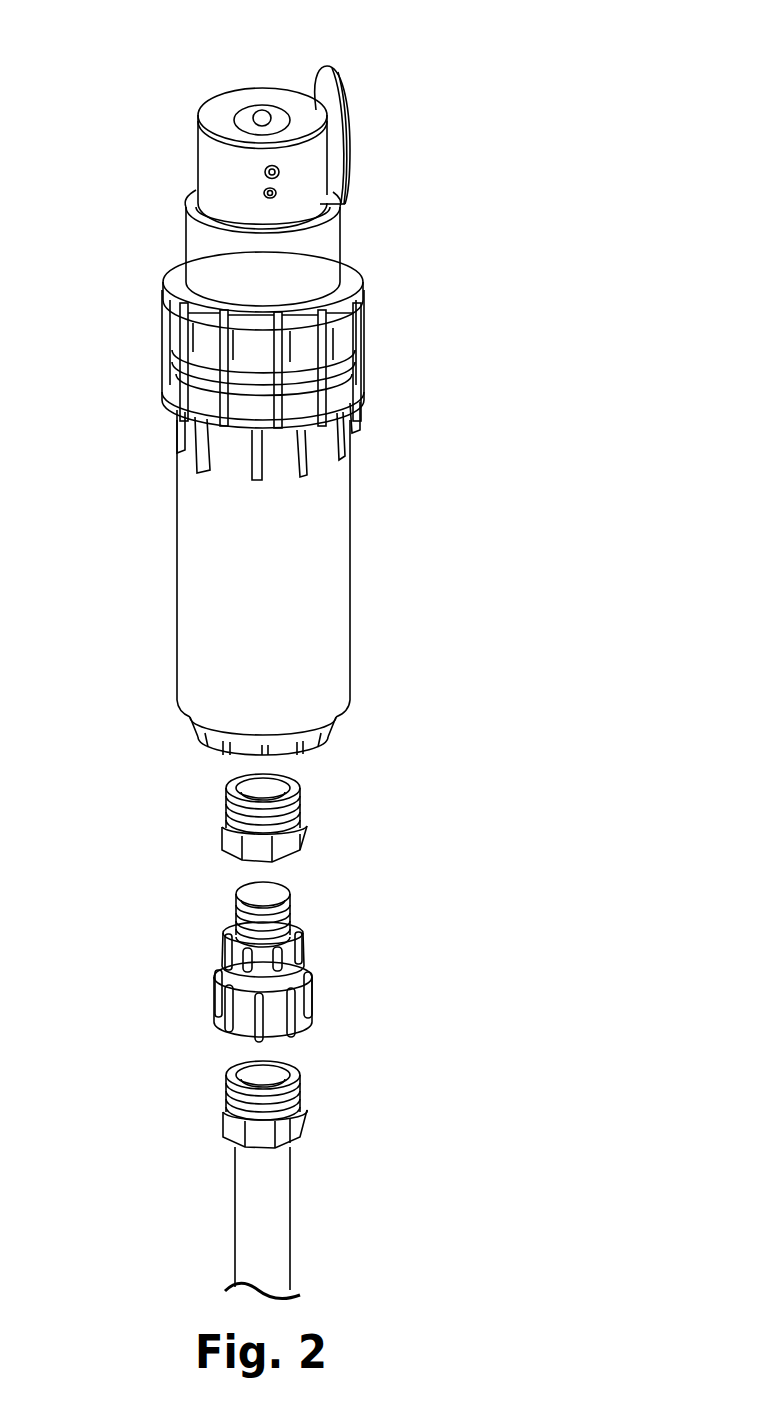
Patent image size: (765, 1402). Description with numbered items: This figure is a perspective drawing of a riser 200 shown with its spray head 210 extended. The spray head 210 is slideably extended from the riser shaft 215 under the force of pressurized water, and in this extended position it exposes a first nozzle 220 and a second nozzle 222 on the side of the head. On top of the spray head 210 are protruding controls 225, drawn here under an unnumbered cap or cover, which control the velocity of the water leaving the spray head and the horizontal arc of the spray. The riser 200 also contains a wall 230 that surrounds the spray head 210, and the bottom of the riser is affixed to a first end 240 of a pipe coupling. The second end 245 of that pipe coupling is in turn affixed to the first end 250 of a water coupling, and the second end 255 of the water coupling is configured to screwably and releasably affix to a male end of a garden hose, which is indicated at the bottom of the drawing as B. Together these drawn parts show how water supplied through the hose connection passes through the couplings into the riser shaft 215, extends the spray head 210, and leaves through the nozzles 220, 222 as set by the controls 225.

The riser 200 is at (512, 342).
The spray head 210 is at (200, 156).
The riser shaft 215 is at (177, 525).
The first nozzle 220 is at (279, 171).
The second nozzle 222 is at (276, 193).
The protruding controls 225 is at (262, 112).
The wall 230 is at (190, 200).
The first end of pipe coupling 240 is at (224, 802).
The second end of pipe coupling 245 is at (304, 828).
The first end of water coupling 250 is at (235, 897).
The second end of water coupling 255 is at (313, 997).
The hose connector B is at (310, 1088).